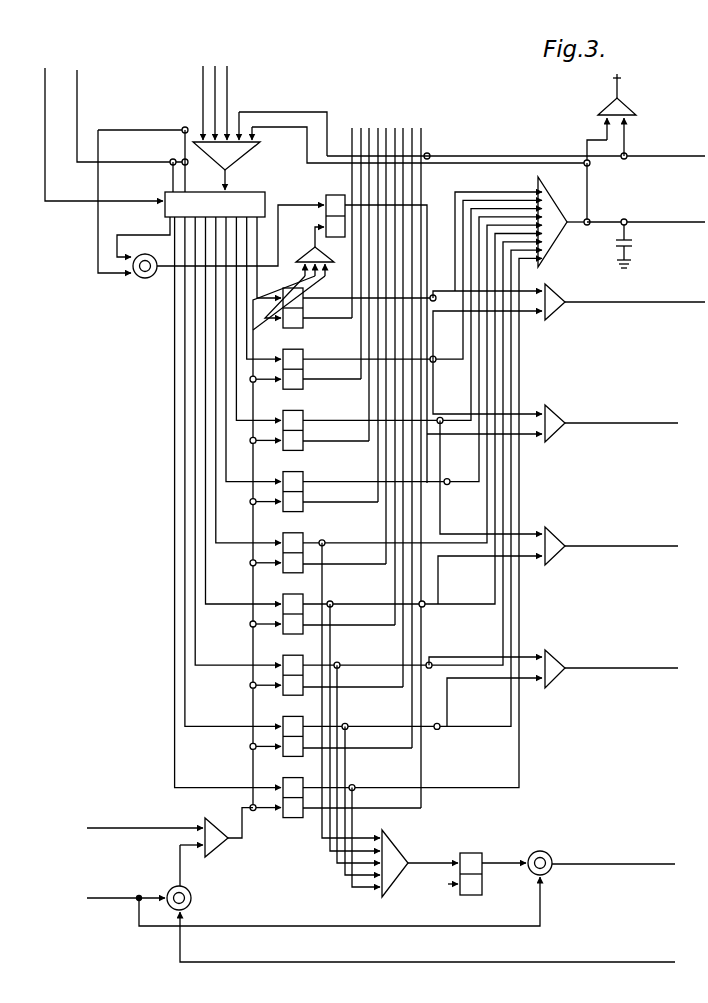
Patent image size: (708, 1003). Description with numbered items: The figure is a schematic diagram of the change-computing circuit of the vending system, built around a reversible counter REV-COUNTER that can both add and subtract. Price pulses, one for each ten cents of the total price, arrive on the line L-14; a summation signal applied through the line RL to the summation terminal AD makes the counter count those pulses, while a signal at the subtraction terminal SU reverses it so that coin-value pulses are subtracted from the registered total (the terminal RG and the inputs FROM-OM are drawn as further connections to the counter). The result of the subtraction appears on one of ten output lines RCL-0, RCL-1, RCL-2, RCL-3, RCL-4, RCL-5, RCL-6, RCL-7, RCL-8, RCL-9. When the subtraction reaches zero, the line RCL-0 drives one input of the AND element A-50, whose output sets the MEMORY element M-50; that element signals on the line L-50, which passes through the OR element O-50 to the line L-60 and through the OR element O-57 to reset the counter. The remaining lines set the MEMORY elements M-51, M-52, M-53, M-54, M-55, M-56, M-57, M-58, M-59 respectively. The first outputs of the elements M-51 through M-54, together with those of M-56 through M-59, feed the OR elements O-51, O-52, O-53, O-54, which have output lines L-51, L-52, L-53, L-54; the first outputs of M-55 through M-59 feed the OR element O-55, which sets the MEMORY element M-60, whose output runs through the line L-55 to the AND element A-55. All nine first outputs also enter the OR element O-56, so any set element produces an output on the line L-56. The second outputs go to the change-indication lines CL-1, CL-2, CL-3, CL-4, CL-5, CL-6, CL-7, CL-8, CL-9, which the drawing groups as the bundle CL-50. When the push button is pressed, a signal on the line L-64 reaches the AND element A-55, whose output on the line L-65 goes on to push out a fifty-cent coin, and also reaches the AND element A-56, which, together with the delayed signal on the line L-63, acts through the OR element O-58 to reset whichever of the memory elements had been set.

The MEMORY element M-50 is at (333, 197).
The MEMORY element M-51 is at (291, 329).
The MEMORY element M-52 is at (291, 390).
The MEMORY element M-53 is at (291, 451).
The MEMORY element M-54 is at (291, 512).
The MEMORY element M-55 is at (291, 573).
The MEMORY element M-56 is at (291, 635).
The MEMORY element M-57 is at (291, 696).
The MEMORY element M-58 is at (291, 757).
The MEMORY element M-59 is at (286, 819).
The MEMORY element M-60 is at (480, 853).
The OR element O-50 is at (634, 104).
The OR element O-51 is at (550, 316).
The OR element O-52 is at (559, 432).
The OR element O-53 is at (552, 560).
The OR element O-54 is at (559, 677).
The OR element O-55 is at (404, 850).
The OR element O-56 is at (546, 236).
The OR element O-57 is at (255, 157).
The OR element O-58 is at (222, 813).
The AND element A-50 is at (156, 278).
The AND element A-55 is at (549, 860).
The AND element A-56 is at (192, 904).
The line L-14 is at (99, 151).
The line L-50 is at (650, 152).
The output line L-51 is at (635, 290).
The output line L-52 is at (650, 412).
The output line L-53 is at (650, 535).
The output line L-54 is at (662, 658).
The line L-55 is at (509, 876).
The line L-56 is at (655, 210).
The line L-60 is at (645, 80).
The line L-63 is at (612, 956).
The line L-64 is at (124, 884).
The line L-65 is at (644, 868).
The line CL-1 is at (361, 126).
The line CL-2 is at (361, 126).
The line CL-3 is at (369, 126).
The line CL-4 is at (378, 126).
The line CL-5 is at (386, 126).
The line CL-6 is at (395, 126).
The line CL-7 is at (403, 126).
The line CL-8 is at (412, 128).
The line CL-9 is at (421, 128).
The clock line CL-50 is at (352, 126).
The output line RCL-0 is at (135, 233).
The output line RCL-1 is at (257, 305).
The output line RCL-2 is at (246, 364).
The output line RCL-3 is at (236, 425).
The output line RCL-4 is at (226, 485).
The output line RCL-5 is at (215, 554).
The output line RCL-6 is at (205, 615).
The output line RCL-7 is at (195, 676).
The output line RCL-8 is at (185, 736).
The output line RCL-9 is at (174, 764).
The line RL is at (70, 116).
The summation terminal AD is at (172, 164).
The subtraction terminal SU is at (208, 182).
The register input RG is at (276, 174).
The reversible counter REV-COUNTER is at (215, 204).
The inputs from OM units FROM-OM is at (197, 60).